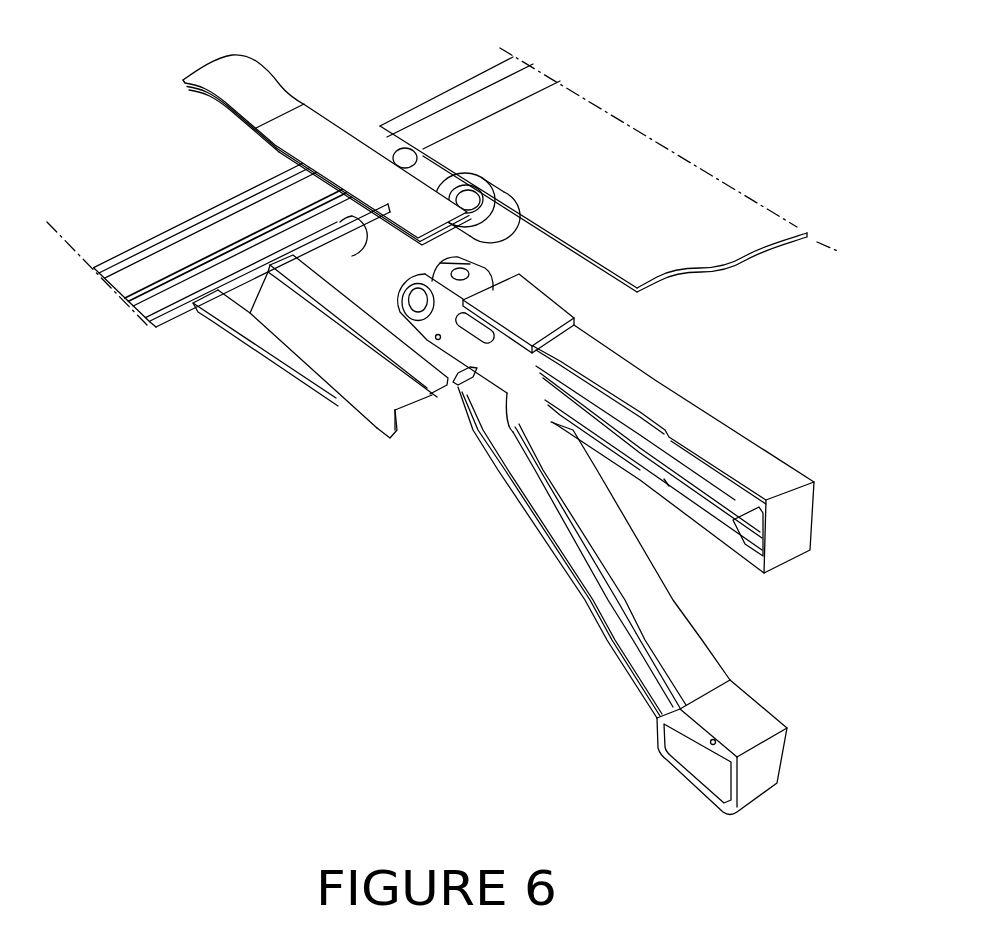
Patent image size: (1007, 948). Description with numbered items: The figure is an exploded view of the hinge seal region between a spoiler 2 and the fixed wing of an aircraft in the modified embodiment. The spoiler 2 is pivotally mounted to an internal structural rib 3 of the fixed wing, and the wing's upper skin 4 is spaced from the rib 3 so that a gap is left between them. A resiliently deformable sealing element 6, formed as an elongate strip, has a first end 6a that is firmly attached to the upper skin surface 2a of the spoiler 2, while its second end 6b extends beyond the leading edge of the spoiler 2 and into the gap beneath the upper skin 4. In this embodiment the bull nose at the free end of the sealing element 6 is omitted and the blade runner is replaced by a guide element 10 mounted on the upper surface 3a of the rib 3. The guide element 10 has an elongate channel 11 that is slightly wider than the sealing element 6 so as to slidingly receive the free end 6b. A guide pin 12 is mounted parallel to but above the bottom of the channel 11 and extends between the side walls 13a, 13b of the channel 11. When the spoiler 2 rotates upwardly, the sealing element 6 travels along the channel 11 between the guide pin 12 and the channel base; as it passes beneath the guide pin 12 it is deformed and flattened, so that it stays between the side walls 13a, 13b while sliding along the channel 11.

The spoiler 2 is at (220, 203).
The upper skin surface 2a is at (155, 255).
The internal structural rib 3 is at (636, 570).
The upper surface of the rib 3a is at (760, 455).
The upper skin 4 is at (608, 177).
The sealing element 6 is at (324, 132).
The first end of the sealing element 6a is at (227, 77).
The second end of the sealing element 6b is at (440, 203).
The guide element 10 is at (339, 391).
The elongate channel 11 is at (322, 348).
The guide pin 12 is at (245, 297).
The side wall of the channel 13a is at (407, 422).
The side wall of the channel 13b is at (458, 388).